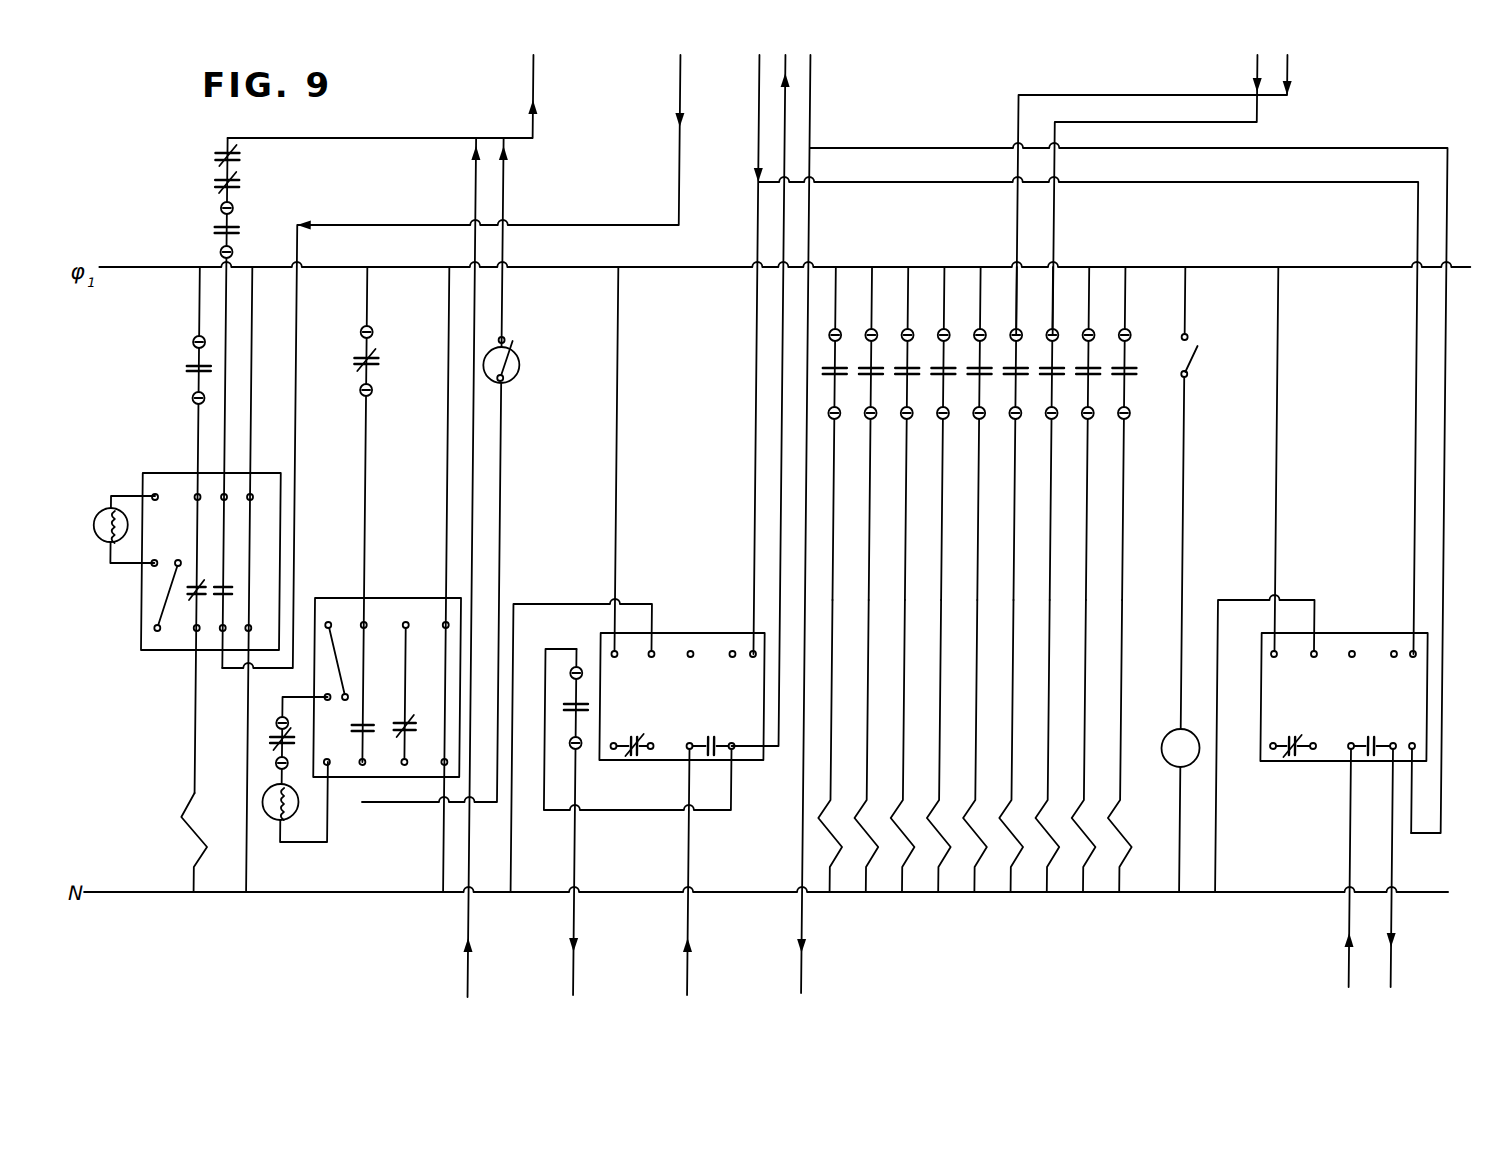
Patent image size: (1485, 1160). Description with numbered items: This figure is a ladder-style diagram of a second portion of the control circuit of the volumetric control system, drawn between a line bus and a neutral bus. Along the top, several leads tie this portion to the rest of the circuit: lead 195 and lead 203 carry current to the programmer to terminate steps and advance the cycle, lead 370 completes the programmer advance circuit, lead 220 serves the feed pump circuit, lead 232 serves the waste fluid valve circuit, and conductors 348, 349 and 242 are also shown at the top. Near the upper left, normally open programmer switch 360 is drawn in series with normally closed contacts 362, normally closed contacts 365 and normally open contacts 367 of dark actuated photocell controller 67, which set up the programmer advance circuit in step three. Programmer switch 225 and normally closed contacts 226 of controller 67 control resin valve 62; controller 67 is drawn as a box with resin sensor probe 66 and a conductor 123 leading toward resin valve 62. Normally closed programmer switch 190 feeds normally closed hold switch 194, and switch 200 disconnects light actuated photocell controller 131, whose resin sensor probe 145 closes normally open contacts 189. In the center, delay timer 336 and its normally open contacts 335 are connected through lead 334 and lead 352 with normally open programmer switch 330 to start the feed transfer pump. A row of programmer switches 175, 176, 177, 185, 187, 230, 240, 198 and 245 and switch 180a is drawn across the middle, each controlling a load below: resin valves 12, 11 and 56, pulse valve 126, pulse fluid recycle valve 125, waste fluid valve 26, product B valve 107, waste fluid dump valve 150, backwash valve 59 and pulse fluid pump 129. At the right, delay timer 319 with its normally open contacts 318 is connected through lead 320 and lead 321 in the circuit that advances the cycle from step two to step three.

The lead 195 is at (533, 82).
The lead 203 is at (477, 183).
The normally closed contacts of relay coil 345 362 is at (213, 159).
The normally closed contacts of relay coil 255 365 is at (244, 182).
The normally open programmer switch 360 is at (214, 228).
The lead 370 is at (679, 85).
The conductor 348 is at (756, 85).
The lead 220 is at (813, 65).
The conductor 349 is at (788, 95).
The conductor 242 is at (1257, 79).
The lead 232 is at (1290, 78).
The normally open programmer switch 225 is at (188, 371).
The normally closed programmer switch 190 is at (379, 361).
The normally closed hold switch 194 is at (523, 368).
The normally open programmer switch 175 is at (846, 366).
The normally open programmer switch 176 is at (888, 375).
The normally open programmer switch 177 is at (923, 368).
The normally open programmer switch 185 is at (962, 375).
The normally closed programmer switch 187 is at (976, 388).
The normally open programmer switch 230 is at (1034, 375).
The contact 240 is at (1067, 368).
The normally open programmer switch 198 is at (1106, 375).
The normally open programmer switch 245 is at (1137, 375).
The switch 180a is at (1203, 347).
The pulse fluid pump 129 is at (1177, 730).
The resin valve 12 is at (840, 856).
The resin valve 11 is at (877, 856).
The resin valve 56 is at (918, 855).
The pulse valve 126 is at (958, 855).
The pulse fluid recycle valve 125 is at (984, 850).
The waste fluid valve 26 is at (1028, 852).
The product B valve 107 is at (1039, 845).
The waste fluid dump valve 150 is at (1076, 845).
The backwash valve 59 is at (1133, 842).
The resin sensor probe 66 is at (107, 548).
The dark actuated photocell controller 67 is at (165, 654).
The normally open contacts of dark actuated photocell controller 67 367 is at (235, 594).
The normally closed contacts of dark actuated photocell controller 67 226 is at (186, 598).
The conductor 123 is at (200, 754).
The resin valve 62 is at (197, 853).
The light actuated photocell controller 131 is at (349, 779).
The normally open contacts of controller 131 189 is at (358, 727).
The switch 200 is at (287, 743).
The resin sensor probe 145 is at (280, 821).
The normally open programmer switch 330 is at (594, 700).
The delay timer 336 is at (733, 632).
The normally open contacts of delay timer 336 335 is at (728, 727).
The lead 352 is at (581, 990).
The lead 334 is at (695, 982).
The normally open contacts of delay timer 319 318 is at (1389, 716).
The delay timer 319 is at (1269, 756).
The lead 320 is at (1355, 971).
The lead 321 is at (1402, 971).